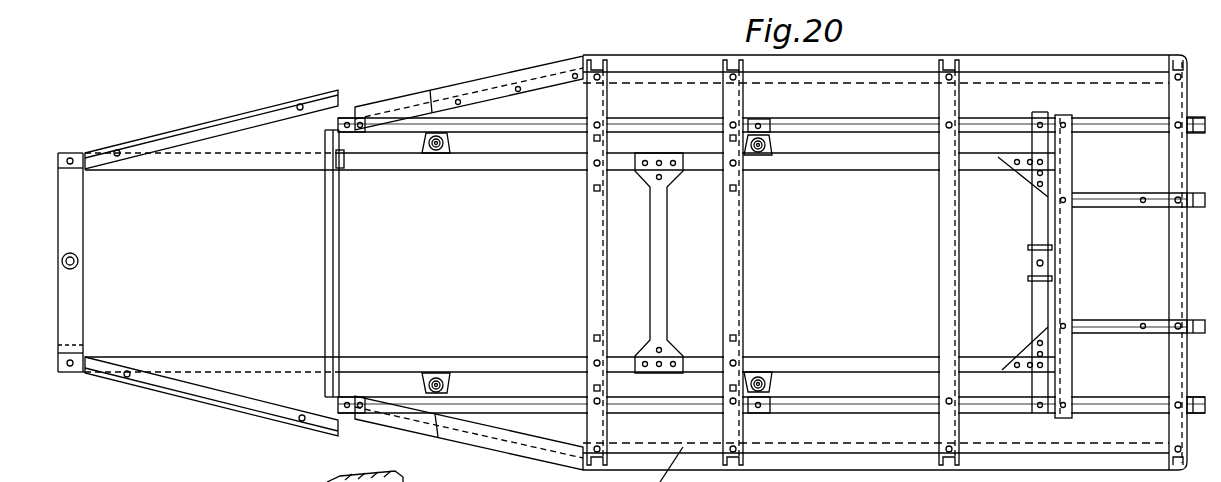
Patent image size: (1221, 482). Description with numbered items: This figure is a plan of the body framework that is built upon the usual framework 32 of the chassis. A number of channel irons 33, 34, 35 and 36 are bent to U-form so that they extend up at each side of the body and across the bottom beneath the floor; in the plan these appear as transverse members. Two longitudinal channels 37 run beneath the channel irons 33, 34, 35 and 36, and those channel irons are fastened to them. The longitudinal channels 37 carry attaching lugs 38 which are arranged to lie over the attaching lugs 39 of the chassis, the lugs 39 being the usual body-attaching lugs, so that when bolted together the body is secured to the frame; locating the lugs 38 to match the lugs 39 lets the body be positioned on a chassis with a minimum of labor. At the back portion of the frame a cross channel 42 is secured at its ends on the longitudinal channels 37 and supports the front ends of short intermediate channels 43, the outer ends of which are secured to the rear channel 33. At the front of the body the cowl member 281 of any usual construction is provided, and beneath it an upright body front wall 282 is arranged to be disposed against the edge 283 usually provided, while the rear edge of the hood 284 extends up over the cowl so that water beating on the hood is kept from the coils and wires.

The framework 32 is at (808, 360).
The channel iron 33 is at (1171, 268).
The channel iron 34 is at (957, 255).
The channel iron 35 is at (740, 233).
The channel iron 36 is at (592, 299).
The longitudinal channel 37 is at (865, 122).
The attaching lug 38 is at (430, 392).
The attaching lug 39 is at (453, 372).
The cross channel 42 is at (1068, 163).
The intermediate channel 43 is at (1129, 203).
The cowl member 281 is at (365, 478).
The body front wall 282 is at (340, 266).
The edge 283 is at (330, 287).
The hood 284 is at (211, 419).